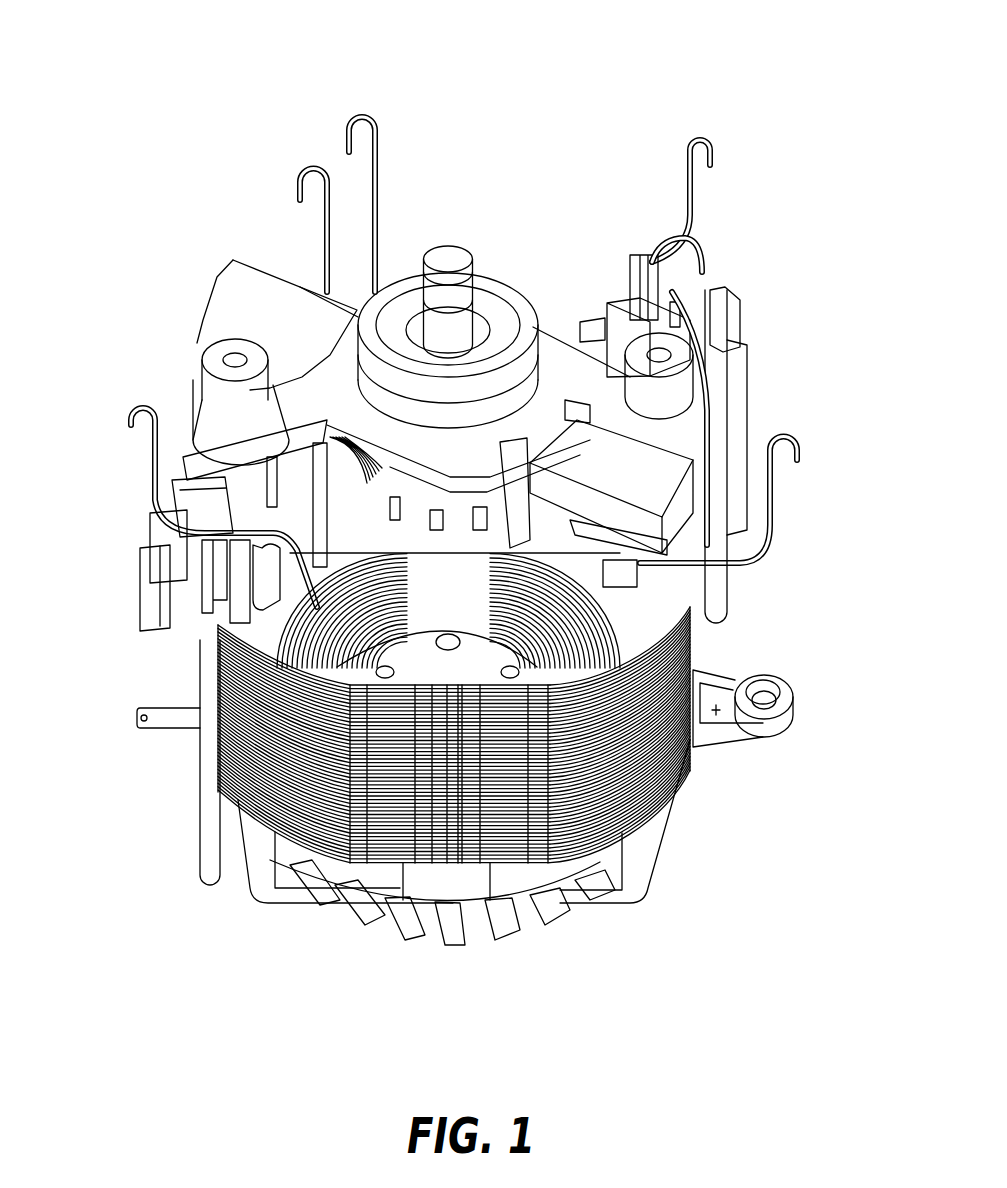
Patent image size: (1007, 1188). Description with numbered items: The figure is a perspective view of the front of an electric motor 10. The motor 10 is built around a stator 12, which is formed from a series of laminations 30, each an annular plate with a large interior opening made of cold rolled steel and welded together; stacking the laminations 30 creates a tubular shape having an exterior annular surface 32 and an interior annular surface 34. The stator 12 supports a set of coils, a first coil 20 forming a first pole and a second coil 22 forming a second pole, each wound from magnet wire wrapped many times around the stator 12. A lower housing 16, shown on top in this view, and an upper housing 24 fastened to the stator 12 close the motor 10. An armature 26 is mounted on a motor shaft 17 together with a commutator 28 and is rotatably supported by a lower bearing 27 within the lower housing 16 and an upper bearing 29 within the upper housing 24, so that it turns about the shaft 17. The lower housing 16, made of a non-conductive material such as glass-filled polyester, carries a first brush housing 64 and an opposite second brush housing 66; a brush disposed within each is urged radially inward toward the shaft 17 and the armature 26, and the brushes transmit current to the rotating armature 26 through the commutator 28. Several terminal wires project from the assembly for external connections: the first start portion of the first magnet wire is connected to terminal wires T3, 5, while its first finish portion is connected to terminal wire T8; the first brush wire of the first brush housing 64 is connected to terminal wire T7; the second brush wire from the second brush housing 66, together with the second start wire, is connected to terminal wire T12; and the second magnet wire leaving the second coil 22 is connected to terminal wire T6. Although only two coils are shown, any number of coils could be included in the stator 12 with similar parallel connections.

The electric motor 10 is at (272, 76).
The stator 12 is at (230, 680).
The lower housing 16 is at (190, 320).
The motor shaft 17 is at (452, 240).
The first coil 20 is at (375, 492).
The second coil 22 is at (300, 617).
The upper housing 24 is at (242, 897).
The armature 26 is at (290, 528).
The lower bearing 27 is at (508, 300).
The commutator 28 is at (443, 483).
The upper bearing 29 is at (415, 945).
The laminations 30 is at (230, 775).
The exterior annular surface 32 is at (680, 650).
The interior annular surface 34 is at (565, 860).
The first brush housing 64 is at (240, 290).
The second brush housing 66 is at (665, 455).
The terminal wires T3 and T5 T3, 5 is at (347, 186).
The terminal wire T6 is at (198, 507).
The terminal wire T7 is at (290, 231).
The terminal wire T8 is at (700, 201).
The terminal wire T12 is at (746, 499).